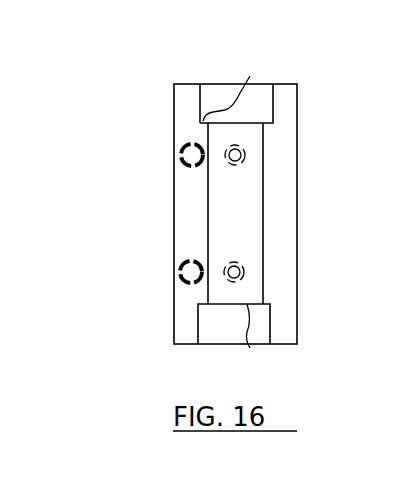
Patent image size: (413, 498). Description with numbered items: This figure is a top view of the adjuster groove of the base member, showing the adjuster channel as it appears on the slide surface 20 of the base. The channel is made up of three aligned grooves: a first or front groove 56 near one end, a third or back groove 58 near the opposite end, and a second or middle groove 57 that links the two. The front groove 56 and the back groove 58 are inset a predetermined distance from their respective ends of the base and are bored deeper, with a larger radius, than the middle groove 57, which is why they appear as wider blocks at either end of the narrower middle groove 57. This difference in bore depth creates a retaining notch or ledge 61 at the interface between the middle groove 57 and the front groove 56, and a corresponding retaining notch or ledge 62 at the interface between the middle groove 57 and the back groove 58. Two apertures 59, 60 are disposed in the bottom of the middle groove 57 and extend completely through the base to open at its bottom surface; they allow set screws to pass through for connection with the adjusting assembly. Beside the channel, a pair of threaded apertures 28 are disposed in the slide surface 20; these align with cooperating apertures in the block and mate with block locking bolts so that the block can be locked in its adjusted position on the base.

The slide surface 20 is at (140, 230).
The threaded apertures 28 is at (185, 148).
The front groove 56 is at (204, 345).
The middle groove 57 is at (263, 284).
The back groove 58 is at (272, 110).
The aperture 59 is at (243, 268).
The aperture 60 is at (243, 158).
The retaining notch 61 is at (253, 339).
The retaining notch 62 is at (250, 76).